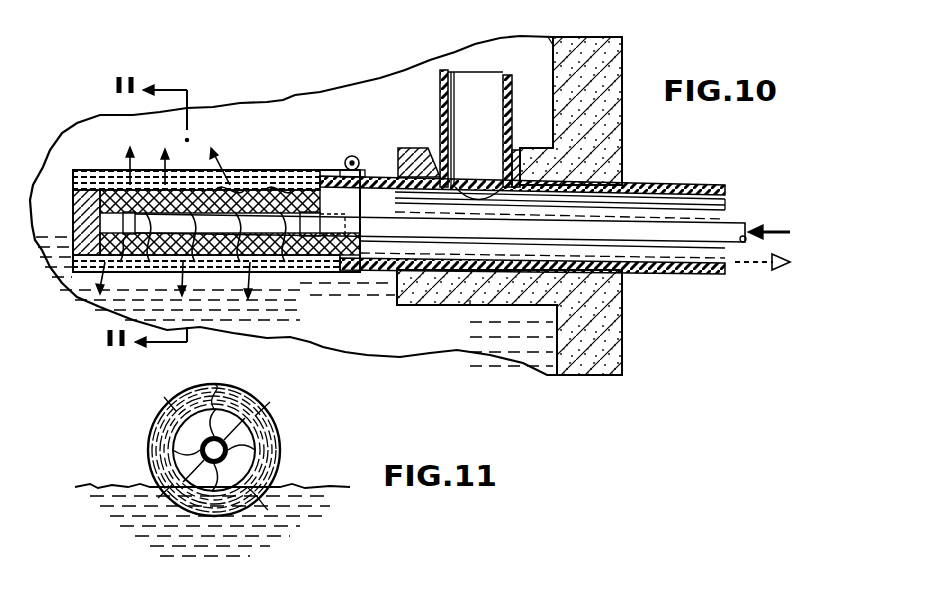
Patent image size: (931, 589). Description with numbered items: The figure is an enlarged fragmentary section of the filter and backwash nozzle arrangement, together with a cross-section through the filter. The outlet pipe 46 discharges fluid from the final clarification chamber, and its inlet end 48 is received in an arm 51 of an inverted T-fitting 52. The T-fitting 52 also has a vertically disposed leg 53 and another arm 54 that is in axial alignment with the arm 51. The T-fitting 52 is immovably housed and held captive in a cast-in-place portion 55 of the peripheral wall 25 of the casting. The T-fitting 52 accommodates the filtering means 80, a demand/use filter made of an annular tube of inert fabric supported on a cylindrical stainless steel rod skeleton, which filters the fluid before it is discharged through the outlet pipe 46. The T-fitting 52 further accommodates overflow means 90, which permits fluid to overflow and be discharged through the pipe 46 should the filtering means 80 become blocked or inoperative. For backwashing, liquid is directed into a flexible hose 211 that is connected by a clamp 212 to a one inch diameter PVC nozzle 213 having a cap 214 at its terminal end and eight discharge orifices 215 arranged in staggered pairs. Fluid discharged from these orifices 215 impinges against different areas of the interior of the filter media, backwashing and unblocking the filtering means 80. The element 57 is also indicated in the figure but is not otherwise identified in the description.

In FIG. 10, the peripheral wall 25 is at (623, 62).
In FIG. 10, the outlet pipe 46 is at (695, 181).
In FIG. 10, the inlet end 48 is at (566, 182).
In FIG. 10, the arm 51 is at (545, 293).
In FIG. 10, the inverted T-fitting 52 is at (495, 181).
In FIG. 10, the vertical leg 53 is at (518, 160).
In FIG. 10, the arm 54 is at (418, 148).
In FIG. 10, the cast-in-place portion 55 is at (483, 300).
In FIG. 10, the line 57 is at (795, 3).
In FIG. 10, the filtering means 80 is at (288, 150).
In FIG. 11, the filtering means 80 is at (136, 421).
In FIG. 10, the overflow means 90 is at (503, 56).
In FIG. 10, the flexible hose 211 is at (652, 235).
In FIG. 10, the clamp 212 is at (313, 180).
In FIG. 10, the PVC nozzle 213 is at (255, 262).
In FIG. 11, the PVC nozzle 213 is at (240, 428).
In FIG. 10, the cap 214 is at (115, 180).
In FIG. 11, the cap 214 is at (285, 410).
In FIG. 10, the discharge orifices 215 is at (233, 183).
In FIG. 11, the discharge orifices 215 is at (213, 417).